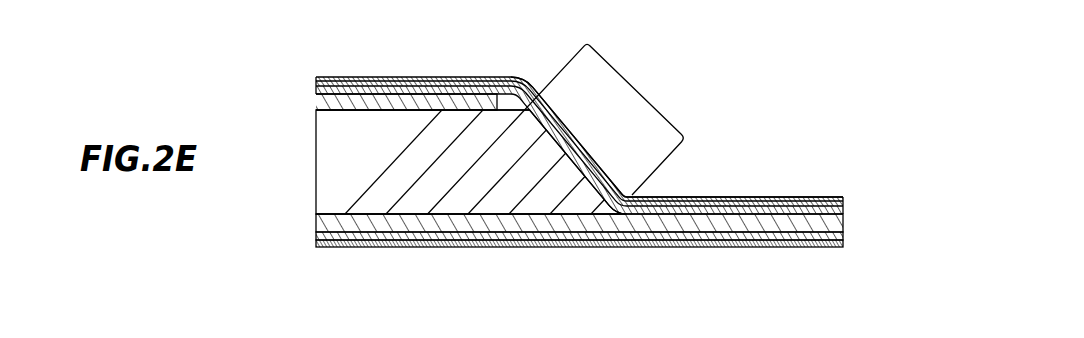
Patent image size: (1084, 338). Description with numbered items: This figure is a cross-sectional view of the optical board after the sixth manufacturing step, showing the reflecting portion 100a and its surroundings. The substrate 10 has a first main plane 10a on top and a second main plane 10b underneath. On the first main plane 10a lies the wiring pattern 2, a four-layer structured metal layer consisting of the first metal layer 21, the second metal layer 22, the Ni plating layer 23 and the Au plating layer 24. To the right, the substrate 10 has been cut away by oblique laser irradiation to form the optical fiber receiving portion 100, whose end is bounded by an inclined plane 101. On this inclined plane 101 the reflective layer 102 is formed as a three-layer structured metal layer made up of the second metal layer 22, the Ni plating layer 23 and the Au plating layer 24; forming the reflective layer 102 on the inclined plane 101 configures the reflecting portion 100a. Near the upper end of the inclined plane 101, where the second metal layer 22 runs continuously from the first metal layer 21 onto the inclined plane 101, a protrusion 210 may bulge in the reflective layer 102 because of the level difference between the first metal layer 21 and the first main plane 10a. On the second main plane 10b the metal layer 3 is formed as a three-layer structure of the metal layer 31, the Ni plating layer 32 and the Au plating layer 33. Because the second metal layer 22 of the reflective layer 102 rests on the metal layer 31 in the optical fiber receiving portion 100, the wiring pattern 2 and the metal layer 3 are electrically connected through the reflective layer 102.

The optical fiber receiving portion 100 is at (825, 158).
The reflecting portion 100a is at (645, 62).
The inclined plane 101 is at (578, 212).
The reflective layer 102 is at (637, 91).
The protrusion 210 is at (521, 74).
The substrate 10 is at (327, 167).
The first main plane 10a is at (395, 110).
The second main plane 10b is at (380, 220).
The wiring pattern 2 is at (246, 38).
The first metal layer 21 is at (316, 101).
The second metal layer 22 is at (316, 90).
The Ni plating layer 23 is at (316, 84).
The Au plating layer 24 is at (316, 79).
The metal layer 3 is at (246, 212).
The metal layer 31 is at (316, 222).
The Ni plating layer 32 is at (316, 237).
The Au plating layer 33 is at (316, 246).